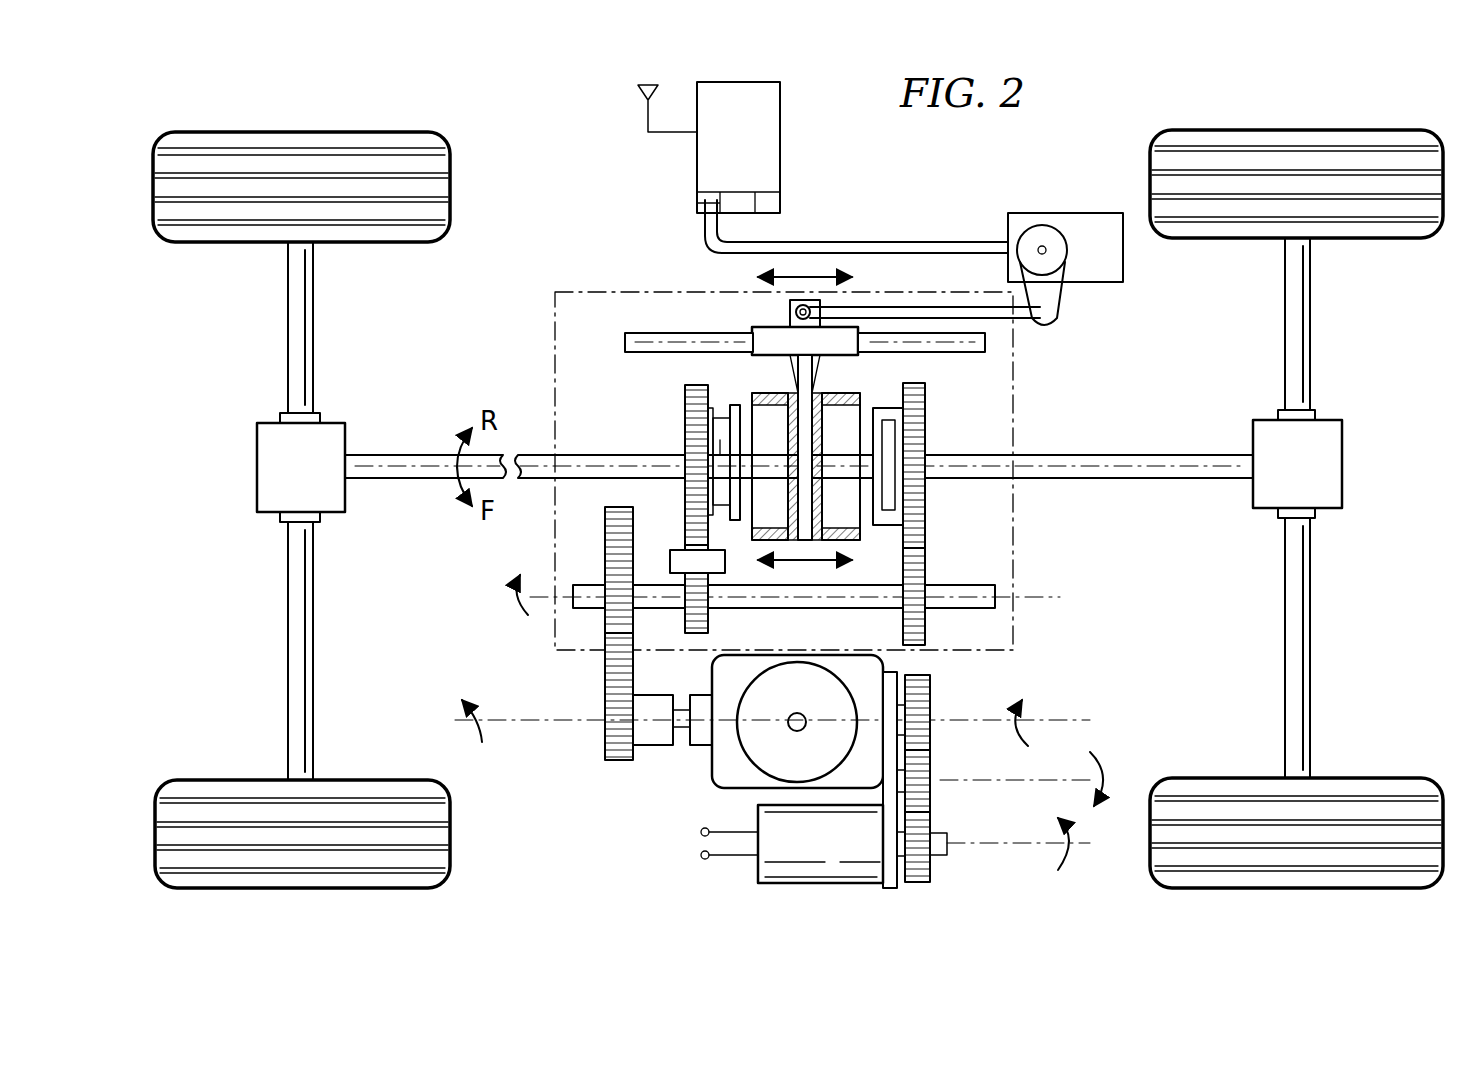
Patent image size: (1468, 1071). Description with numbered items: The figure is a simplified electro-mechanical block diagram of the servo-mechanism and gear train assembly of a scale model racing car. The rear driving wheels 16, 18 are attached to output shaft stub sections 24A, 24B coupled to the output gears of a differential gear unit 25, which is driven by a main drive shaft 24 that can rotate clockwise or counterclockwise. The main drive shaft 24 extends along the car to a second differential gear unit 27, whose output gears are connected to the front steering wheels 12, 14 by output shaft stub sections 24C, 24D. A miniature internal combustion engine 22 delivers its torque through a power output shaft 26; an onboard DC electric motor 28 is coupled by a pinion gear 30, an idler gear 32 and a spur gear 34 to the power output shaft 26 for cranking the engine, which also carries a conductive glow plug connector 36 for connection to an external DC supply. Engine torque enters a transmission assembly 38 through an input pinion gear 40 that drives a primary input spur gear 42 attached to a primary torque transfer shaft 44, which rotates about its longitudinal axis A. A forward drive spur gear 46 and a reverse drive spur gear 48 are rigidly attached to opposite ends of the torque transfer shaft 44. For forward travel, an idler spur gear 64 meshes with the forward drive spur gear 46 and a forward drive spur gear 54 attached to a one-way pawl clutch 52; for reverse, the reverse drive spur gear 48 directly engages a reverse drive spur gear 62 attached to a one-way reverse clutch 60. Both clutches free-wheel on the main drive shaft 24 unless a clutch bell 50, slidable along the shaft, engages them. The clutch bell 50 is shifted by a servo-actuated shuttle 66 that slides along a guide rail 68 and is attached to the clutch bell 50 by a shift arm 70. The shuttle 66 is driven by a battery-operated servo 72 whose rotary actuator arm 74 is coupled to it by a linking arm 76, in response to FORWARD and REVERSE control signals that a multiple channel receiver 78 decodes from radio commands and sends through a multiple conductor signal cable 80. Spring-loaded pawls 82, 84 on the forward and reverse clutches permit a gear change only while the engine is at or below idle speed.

The front steering wheel 12 is at (300, 890).
The front steering wheel 14 is at (300, 132).
The rear driving wheel 16 is at (1300, 890).
The rear driving wheel 18 is at (1299, 130).
The internal combustion engine 22 is at (712, 675).
The main drive shaft 24 is at (406, 454).
The output shaft stub section 24A is at (1310, 652).
The output shaft stub section 24B is at (1310, 322).
The output shaft stub section 24C is at (288, 650).
The output shaft stub section 24D is at (288, 327).
The differential gear unit 25 is at (1297, 464).
The power output shaft 26 is at (680, 746).
The differential gear unit 27 is at (301, 467).
The DC electric motor 28 is at (822, 885).
The pinion gear 30 is at (932, 872).
The idler gear 32 is at (930, 790).
The spur gear 34 is at (930, 700).
The glow plug connector 36 is at (797, 731).
The transmission assembly 38 is at (583, 292).
The input pinion gear 40 is at (604, 748).
The primary input spur gear 42 is at (602, 554).
The primary torque transfer shaft 44 is at (958, 584).
The forward drive spur gear 46 is at (710, 622).
The reverse drive spur gear 48 is at (927, 626).
The clutch bell 50 is at (780, 392).
The one-way pawl clutch 52 is at (735, 405).
The forward drive spur gear 54 is at (685, 407).
The one-way reverse clutch 60 is at (882, 408).
The reverse drive spur gear 62 is at (927, 412).
The idler spur gear 64 is at (685, 540).
The servo-actuated shuttle 66 is at (875, 307).
The guide rail 68 is at (654, 332).
The shift arm 70 is at (812, 365).
The servo 72 is at (1060, 213).
The rotary actuator arm 74 is at (1066, 296).
The linking arm 76 is at (998, 322).
The receiver 78 is at (783, 144).
The signal cable 80 is at (867, 242).
The spring-loaded pawl 82 is at (722, 442).
The spring-loaded pawl 84 is at (890, 446).
The longitudinal axis A is at (1048, 598).